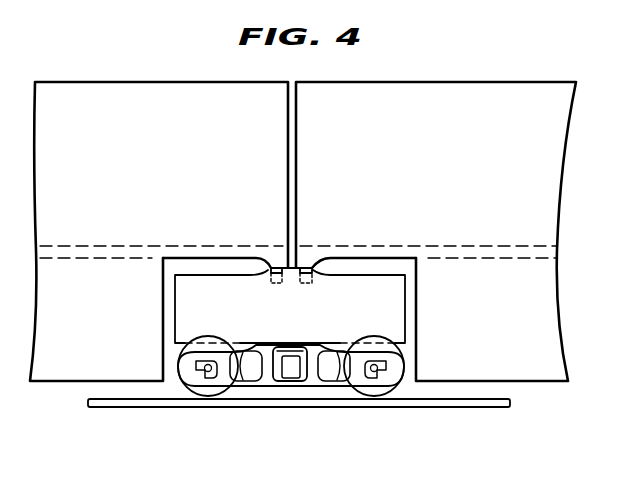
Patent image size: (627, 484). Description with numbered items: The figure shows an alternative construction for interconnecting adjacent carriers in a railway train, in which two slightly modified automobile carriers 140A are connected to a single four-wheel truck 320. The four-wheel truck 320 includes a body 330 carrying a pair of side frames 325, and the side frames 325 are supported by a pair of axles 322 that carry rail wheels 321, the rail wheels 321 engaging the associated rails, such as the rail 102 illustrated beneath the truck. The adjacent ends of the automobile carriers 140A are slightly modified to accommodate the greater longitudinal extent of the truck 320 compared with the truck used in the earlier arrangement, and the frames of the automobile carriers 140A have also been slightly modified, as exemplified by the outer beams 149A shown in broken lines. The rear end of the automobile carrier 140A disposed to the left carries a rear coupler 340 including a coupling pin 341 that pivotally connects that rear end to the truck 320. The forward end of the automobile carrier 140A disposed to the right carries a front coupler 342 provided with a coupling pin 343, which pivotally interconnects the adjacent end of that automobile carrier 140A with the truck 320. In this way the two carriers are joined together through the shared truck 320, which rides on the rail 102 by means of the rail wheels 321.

The automobile carrier 140A is at (137, 81).
The outer beam 149A is at (121, 246).
The four-wheel truck 320 is at (231, 289).
The body 330 is at (192, 298).
The rear coupler 340 is at (272, 264).
The coupling pin 341 is at (283, 271).
The front coupler 342 is at (306, 264).
The coupling pin 343 is at (314, 266).
The rail wheel 321 is at (218, 388).
The axle 322 is at (202, 370).
The side frame 325 is at (278, 382).
The rail 102 is at (96, 394).